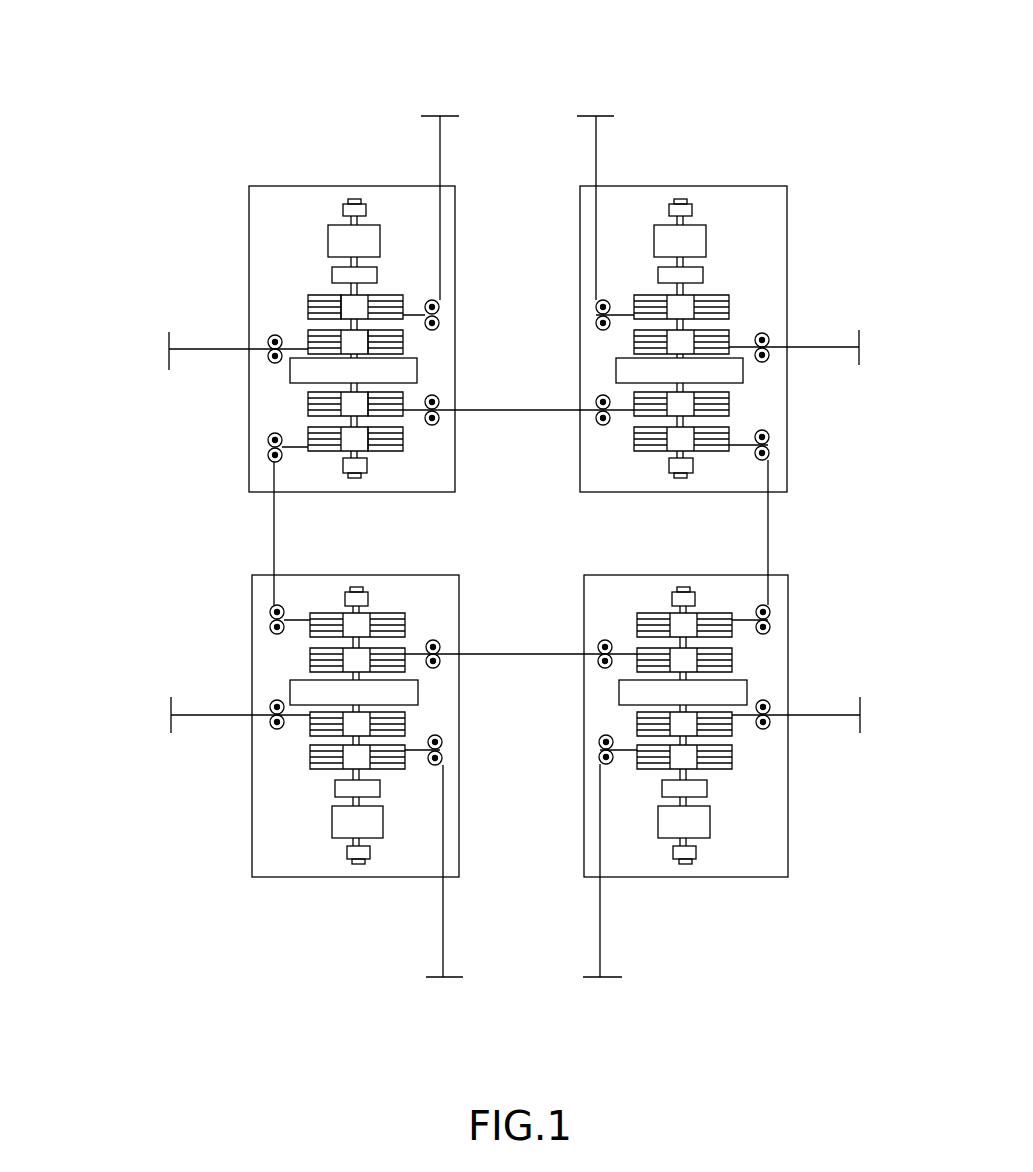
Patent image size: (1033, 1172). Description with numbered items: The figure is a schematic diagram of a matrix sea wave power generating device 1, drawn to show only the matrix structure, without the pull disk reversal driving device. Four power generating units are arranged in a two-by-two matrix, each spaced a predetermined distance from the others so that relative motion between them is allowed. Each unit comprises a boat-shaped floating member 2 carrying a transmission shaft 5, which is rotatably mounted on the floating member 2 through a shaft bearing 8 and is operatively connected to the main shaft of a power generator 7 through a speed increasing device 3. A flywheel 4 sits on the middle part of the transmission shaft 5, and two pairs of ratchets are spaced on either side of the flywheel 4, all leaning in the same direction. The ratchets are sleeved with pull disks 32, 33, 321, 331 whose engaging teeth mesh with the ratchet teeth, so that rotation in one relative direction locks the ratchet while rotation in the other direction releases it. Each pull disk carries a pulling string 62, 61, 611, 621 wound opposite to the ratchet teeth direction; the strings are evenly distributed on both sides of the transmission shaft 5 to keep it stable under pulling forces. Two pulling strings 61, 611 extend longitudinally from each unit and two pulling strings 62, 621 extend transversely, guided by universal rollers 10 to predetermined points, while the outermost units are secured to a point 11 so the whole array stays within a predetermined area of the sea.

The matrix sea wave power generating device 1 is at (683, 163).
The floating member 2 is at (248, 307).
The speed increasing device 3 is at (340, 273).
The flywheel 4 is at (405, 372).
The transmission shaft 5 is at (345, 203).
The power generator 7 is at (340, 243).
The shaft bearing 8 is at (363, 200).
The universal roller 10 is at (438, 305).
The point 11 is at (423, 114).
The pull disk 32 is at (320, 303).
The pull disk 33 is at (387, 337).
The pulling string 61 is at (441, 213).
The pulling string 62 is at (213, 350).
The pull disk 321 is at (390, 443).
The pull disk 331 is at (392, 404).
The pulling string 611 is at (272, 527).
The pulling string 621 is at (495, 409).